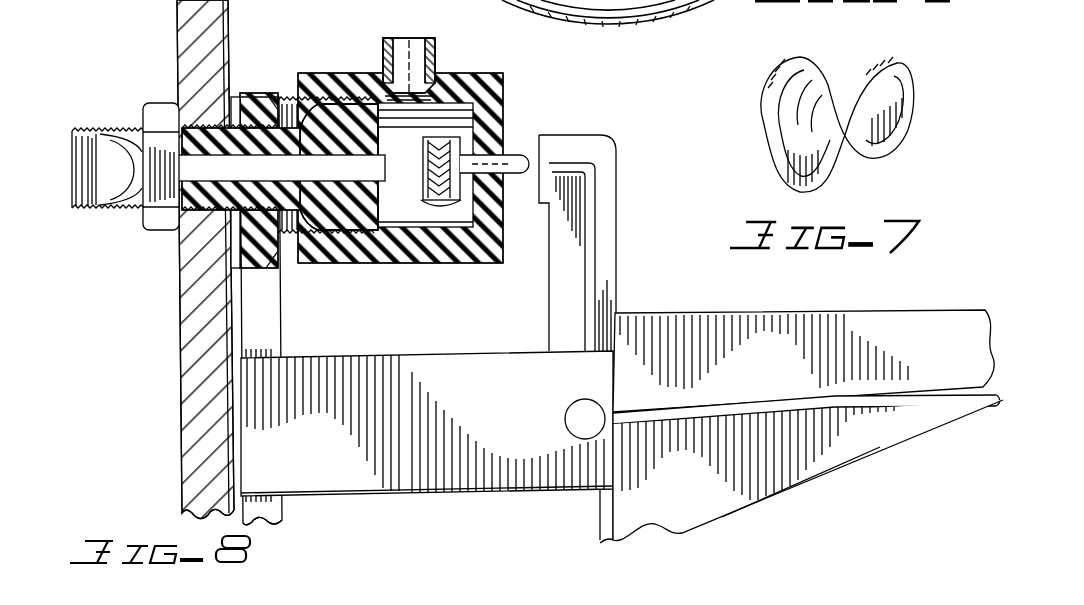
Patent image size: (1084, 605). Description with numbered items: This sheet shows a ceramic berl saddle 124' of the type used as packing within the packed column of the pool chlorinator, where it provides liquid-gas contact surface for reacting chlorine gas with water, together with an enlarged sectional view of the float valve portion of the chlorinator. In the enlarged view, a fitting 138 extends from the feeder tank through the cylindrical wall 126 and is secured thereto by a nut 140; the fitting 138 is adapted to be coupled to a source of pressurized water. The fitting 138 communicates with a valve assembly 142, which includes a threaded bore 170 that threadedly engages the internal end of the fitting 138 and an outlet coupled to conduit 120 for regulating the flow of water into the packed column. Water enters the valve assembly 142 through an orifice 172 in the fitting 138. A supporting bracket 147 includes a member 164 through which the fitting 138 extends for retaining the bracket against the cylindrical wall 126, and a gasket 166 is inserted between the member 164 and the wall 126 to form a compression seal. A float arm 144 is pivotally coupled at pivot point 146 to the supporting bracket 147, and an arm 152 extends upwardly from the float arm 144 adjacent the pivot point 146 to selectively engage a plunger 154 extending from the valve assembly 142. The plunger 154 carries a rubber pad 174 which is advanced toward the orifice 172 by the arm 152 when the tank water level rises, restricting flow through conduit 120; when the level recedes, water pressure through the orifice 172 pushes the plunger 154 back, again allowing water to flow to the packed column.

In FIG. 8, the conduit 120 is at (405, 38).
In FIG. 7, the ceramic berl saddle 124' is at (867, 124).
In FIG. 8, the cylindrical wall 126 is at (187, 46).
In FIG. 8, the fitting 138 is at (110, 128).
In FIG. 8, the nut 140 is at (153, 232).
In FIG. 8, the valve assembly 142 is at (509, 102).
In FIG. 8, the float arm 144 is at (822, 328).
In FIG. 8, the pivot point 146 is at (577, 417).
In FIG. 8, the supporting bracket 147 is at (437, 367).
In FIG. 8, the arm 152 is at (614, 243).
In FIG. 8, the plunger 154 is at (511, 150).
In FIG. 8, the member 164 is at (270, 314).
In FIG. 8, the gasket 166 is at (234, 98).
In FIG. 8, the threaded bore 170 is at (347, 78).
In FIG. 8, the orifice 172 is at (385, 176).
In FIG. 8, the rubber pad 174 is at (421, 187).